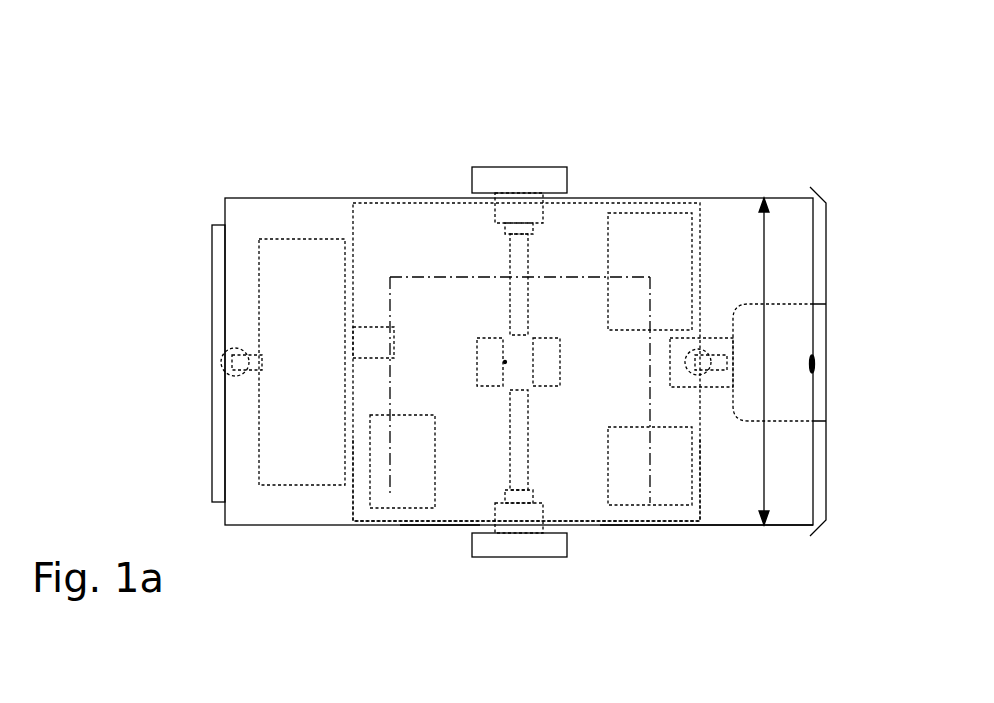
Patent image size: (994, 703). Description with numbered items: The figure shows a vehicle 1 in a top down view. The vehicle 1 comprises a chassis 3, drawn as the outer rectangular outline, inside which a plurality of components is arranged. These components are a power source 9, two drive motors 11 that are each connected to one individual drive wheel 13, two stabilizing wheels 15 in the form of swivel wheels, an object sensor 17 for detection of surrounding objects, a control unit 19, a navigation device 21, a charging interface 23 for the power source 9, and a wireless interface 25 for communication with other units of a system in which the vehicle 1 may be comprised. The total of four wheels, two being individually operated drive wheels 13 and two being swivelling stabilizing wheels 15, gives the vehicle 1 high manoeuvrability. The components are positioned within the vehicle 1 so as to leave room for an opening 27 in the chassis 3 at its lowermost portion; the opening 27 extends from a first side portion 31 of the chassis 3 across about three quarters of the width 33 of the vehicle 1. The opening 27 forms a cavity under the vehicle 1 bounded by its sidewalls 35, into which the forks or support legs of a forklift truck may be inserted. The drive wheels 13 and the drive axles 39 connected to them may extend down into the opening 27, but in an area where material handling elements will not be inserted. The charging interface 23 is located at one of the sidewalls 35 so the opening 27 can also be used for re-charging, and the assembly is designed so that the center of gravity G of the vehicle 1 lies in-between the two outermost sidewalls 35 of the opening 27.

The vehicle 1 is at (300, 72).
The chassis 3 is at (223, 200).
The power source 9 is at (291, 379).
The drive motors 11 is at (483, 367).
The drive wheels 13 is at (485, 178).
The stabilizing wheels 15 is at (257, 368).
The object sensor 17 is at (817, 348).
The control unit 19 is at (393, 480).
The navigation device 21 is at (633, 270).
The charging interface 23 is at (358, 337).
The wireless interface 25 is at (650, 485).
The opening 27 is at (443, 540).
The first side portion 31 is at (723, 528).
The width 33 is at (764, 475).
The sidewalls 35 is at (399, 493).
The drive axles 39 is at (520, 288).
The center of gravity G is at (505, 362).